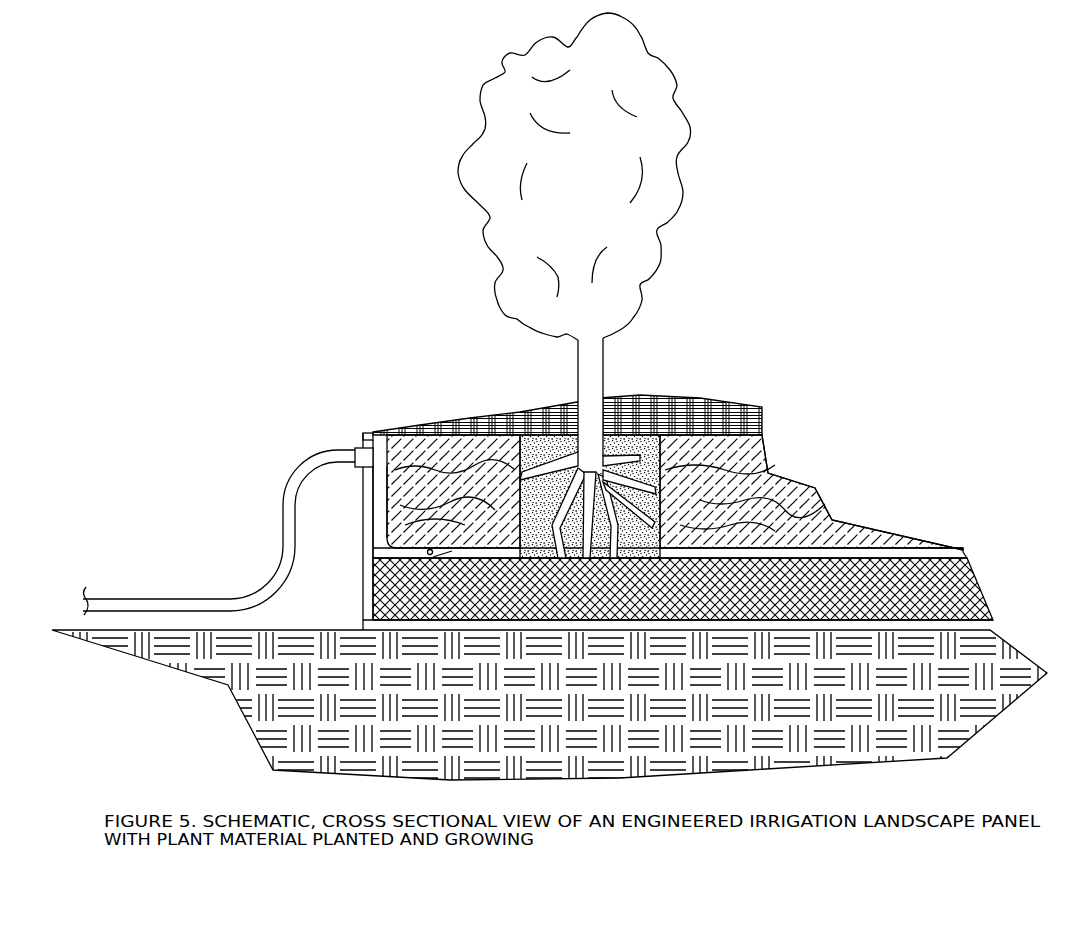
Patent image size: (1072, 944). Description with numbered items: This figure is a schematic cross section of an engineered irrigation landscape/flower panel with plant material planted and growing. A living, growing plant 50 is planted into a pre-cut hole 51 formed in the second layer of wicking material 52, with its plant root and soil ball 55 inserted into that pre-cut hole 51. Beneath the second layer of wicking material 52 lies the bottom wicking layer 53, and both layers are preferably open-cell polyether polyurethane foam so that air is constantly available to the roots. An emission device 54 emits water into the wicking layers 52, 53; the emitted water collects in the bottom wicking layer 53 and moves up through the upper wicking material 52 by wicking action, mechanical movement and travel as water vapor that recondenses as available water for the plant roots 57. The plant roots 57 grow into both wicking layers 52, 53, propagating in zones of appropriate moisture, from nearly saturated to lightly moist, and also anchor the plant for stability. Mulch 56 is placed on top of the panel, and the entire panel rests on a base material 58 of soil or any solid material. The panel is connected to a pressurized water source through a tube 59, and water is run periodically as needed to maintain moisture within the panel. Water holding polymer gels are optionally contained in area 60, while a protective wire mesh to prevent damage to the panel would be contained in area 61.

The plant 50 is at (570, 180).
The pre-cut hole 51 is at (663, 455).
The second layer of wicking material 52 is at (807, 497).
The bottom wicking layer 53 is at (982, 598).
The emission device 54 is at (373, 580).
The plant root and soil ball 55 is at (542, 432).
The mulch 56 is at (432, 418).
The plant roots 57 is at (748, 458).
The base material 58 is at (902, 702).
The tube 59 is at (287, 520).
The area for water holding polymer gels 60 is at (963, 570).
The area for wire mesh 61 is at (363, 433).